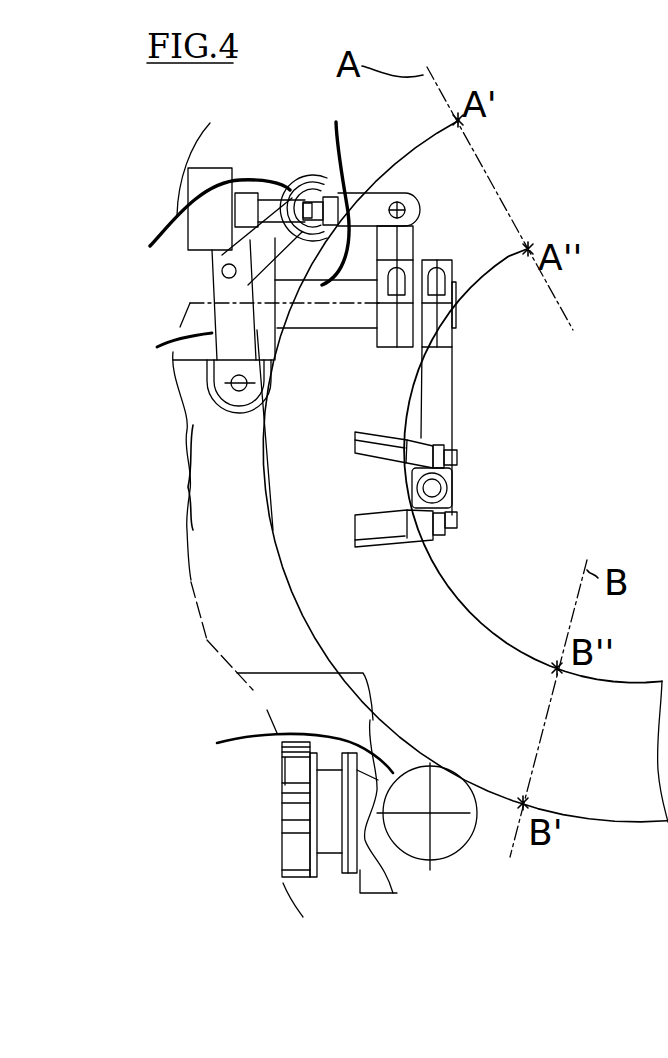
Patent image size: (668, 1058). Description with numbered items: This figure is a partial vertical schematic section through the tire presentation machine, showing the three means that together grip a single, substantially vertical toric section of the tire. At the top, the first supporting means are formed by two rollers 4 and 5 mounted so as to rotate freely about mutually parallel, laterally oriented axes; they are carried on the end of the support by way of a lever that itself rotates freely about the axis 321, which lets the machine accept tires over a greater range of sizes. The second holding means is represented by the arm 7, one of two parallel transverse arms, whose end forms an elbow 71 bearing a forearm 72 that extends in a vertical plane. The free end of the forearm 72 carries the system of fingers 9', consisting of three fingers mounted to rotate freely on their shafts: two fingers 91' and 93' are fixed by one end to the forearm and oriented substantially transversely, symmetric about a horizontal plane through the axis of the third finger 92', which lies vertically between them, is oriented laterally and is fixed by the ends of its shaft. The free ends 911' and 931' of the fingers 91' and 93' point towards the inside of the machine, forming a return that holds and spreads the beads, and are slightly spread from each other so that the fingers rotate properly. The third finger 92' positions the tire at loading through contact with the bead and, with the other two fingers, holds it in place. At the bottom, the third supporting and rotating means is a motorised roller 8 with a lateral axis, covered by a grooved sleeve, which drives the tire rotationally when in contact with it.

The roller 4 is at (205, 388).
The roller 5 is at (172, 215).
The arm 7 is at (250, 185).
The motorised roller 8 is at (218, 743).
The system of fingers 9' is at (198, 510).
The elbow 71 is at (455, 304).
The forearm 72 is at (453, 398).
The finger 91' is at (365, 424).
The free end of finger 911' is at (302, 456).
The third finger 92' is at (364, 490).
The finger 93' is at (365, 554).
The free end of finger 931' is at (304, 533).
The axis 321 is at (222, 272).